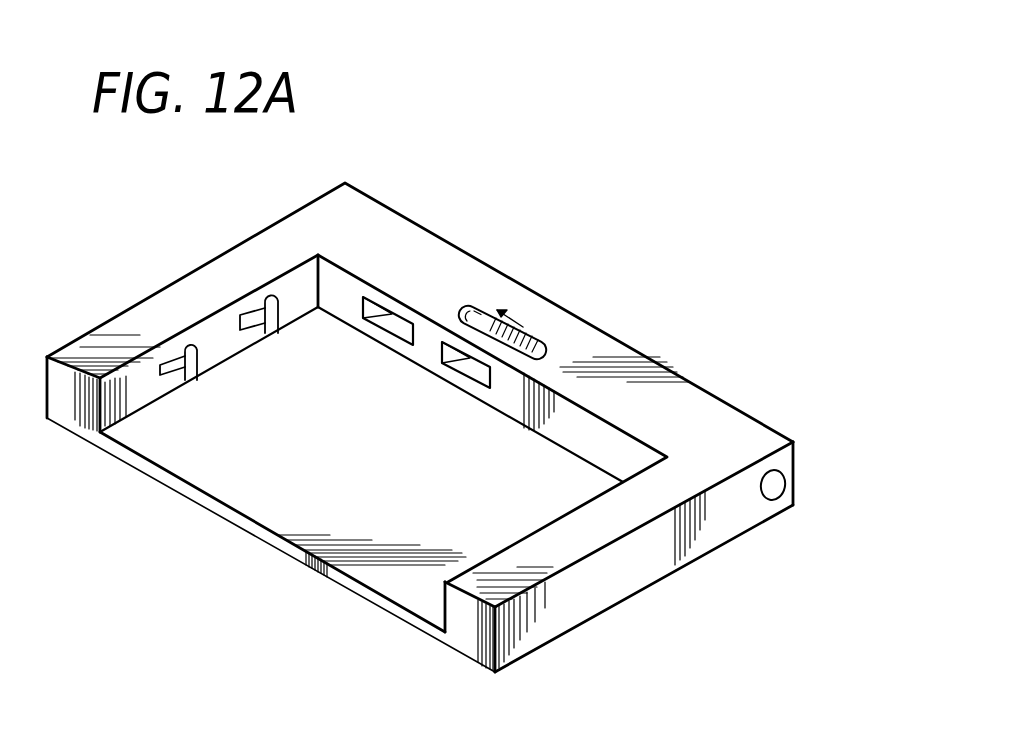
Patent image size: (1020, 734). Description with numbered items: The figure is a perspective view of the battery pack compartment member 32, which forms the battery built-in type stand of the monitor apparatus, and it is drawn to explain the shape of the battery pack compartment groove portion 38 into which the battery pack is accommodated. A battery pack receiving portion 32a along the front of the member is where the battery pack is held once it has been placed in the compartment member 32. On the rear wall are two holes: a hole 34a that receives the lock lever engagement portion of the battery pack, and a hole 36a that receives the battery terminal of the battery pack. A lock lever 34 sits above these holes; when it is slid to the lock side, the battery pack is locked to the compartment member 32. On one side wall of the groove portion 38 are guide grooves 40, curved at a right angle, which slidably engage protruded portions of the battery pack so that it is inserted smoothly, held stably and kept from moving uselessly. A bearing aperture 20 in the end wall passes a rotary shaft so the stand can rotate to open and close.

The bearing aperture 20 is at (773, 492).
The battery pack compartment member 32 is at (470, 630).
The battery pack receiving portion 32a is at (290, 528).
The lock lever 34 is at (523, 333).
The hole 34a is at (487, 380).
The hole 36a is at (397, 325).
The battery pack compartment groove portion 38 is at (377, 553).
The guide grooves 40 is at (268, 300).